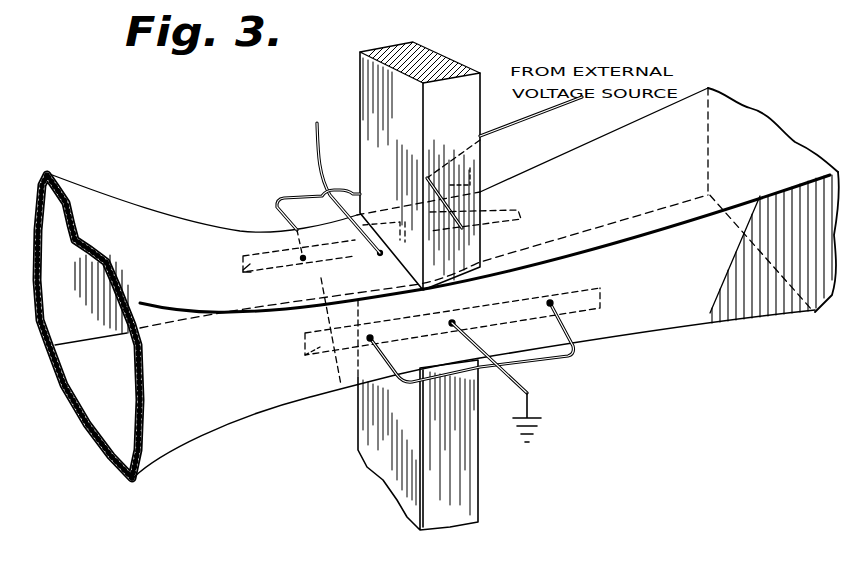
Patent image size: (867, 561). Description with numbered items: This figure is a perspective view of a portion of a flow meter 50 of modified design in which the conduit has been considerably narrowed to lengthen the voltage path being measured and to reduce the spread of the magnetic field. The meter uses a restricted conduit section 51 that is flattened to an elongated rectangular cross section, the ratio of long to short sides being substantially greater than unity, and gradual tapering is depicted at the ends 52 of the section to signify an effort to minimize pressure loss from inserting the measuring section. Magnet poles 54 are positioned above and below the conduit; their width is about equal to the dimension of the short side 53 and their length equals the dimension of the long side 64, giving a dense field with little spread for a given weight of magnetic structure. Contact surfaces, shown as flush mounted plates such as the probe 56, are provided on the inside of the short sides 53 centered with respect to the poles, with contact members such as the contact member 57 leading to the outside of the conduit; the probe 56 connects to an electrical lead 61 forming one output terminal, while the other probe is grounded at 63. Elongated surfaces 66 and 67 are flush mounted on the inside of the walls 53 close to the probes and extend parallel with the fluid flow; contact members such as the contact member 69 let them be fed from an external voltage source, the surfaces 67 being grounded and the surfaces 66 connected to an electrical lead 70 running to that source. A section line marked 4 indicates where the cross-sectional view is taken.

The flow meter 50 is at (238, 156).
The restricted conduit section 51 is at (214, 233).
The ends of the conduit section 52 is at (96, 206).
The short sides 53 is at (187, 428).
The magnet poles 54 is at (475, 250).
The probe 56 is at (347, 268).
The contact member 57 is at (462, 320).
The electrical lead 61 is at (316, 128).
The ground 63 is at (532, 387).
The long side 64 is at (176, 274).
The elongated surface 66 is at (243, 273).
The elongated surface 67 is at (318, 352).
The contact member 69 is at (370, 341).
The electrical lead 70 is at (281, 203).
The section line 4- 4 is at (260, 340).